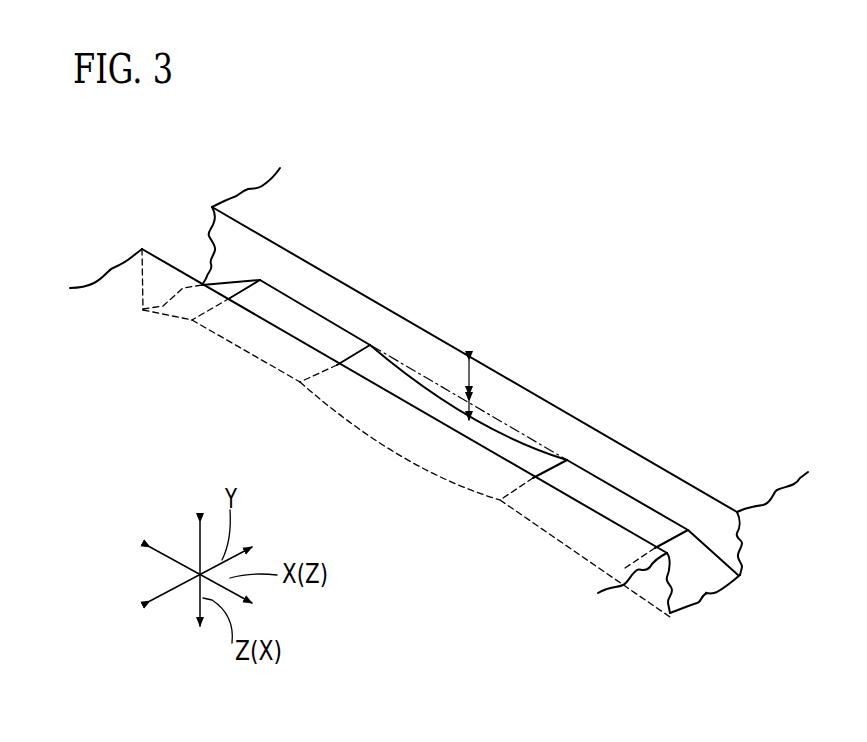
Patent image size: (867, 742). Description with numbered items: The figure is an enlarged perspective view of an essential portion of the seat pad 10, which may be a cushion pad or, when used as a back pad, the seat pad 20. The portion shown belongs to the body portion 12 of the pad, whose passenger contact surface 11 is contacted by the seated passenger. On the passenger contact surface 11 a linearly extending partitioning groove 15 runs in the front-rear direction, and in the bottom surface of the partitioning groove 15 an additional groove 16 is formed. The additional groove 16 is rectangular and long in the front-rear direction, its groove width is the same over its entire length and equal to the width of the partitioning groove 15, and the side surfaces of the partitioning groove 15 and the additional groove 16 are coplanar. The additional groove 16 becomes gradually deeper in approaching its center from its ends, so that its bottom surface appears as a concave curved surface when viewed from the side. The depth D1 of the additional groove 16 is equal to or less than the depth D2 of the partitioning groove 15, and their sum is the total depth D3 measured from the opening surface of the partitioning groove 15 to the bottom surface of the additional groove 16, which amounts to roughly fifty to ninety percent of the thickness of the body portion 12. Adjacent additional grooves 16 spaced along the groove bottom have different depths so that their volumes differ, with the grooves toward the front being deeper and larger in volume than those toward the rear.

The seat pad 10 is at (439, 360).
The seat pad 20 is at (439, 360).
The passenger contact surface 11 is at (380, 261).
The body portion 12 is at (264, 204).
The partitioning groove 15 is at (295, 280).
The additional groove 16 is at (227, 287).
The depth of the additional grooves D1 is at (470, 412).
The depth of the partitioning grooves D2 is at (470, 380).
The total depth D3 is at (565, 303).